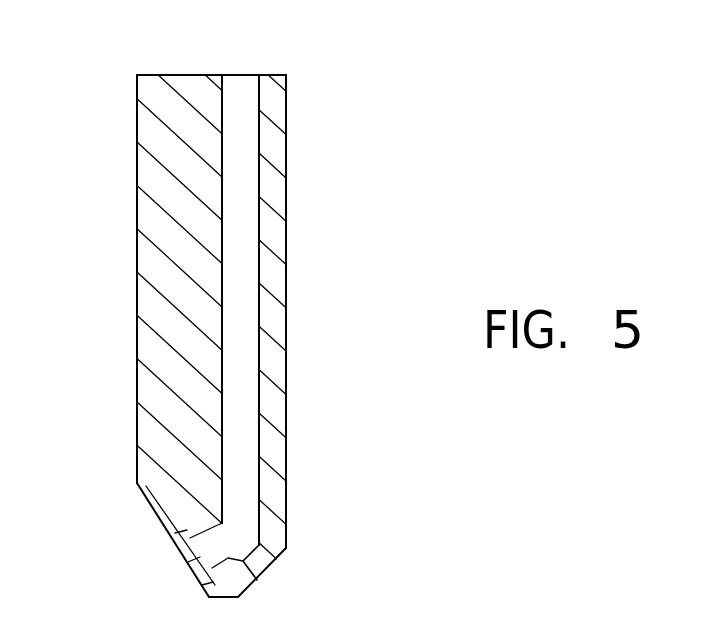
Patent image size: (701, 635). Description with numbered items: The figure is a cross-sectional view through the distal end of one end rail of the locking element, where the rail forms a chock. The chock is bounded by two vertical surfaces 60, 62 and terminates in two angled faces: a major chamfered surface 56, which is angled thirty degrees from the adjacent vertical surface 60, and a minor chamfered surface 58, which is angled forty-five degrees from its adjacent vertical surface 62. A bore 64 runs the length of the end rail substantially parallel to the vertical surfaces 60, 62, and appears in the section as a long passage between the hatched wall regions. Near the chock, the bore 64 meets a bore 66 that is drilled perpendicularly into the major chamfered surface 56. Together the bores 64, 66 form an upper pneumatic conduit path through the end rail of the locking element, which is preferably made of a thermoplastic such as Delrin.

The major chamfered surface 56 is at (138, 484).
The minor chamfered surface 58 is at (268, 567).
The vertical surface 60 is at (137, 288).
The vertical surface 62 is at (287, 289).
The bore 64 is at (241, 81).
The bore 66 is at (192, 560).